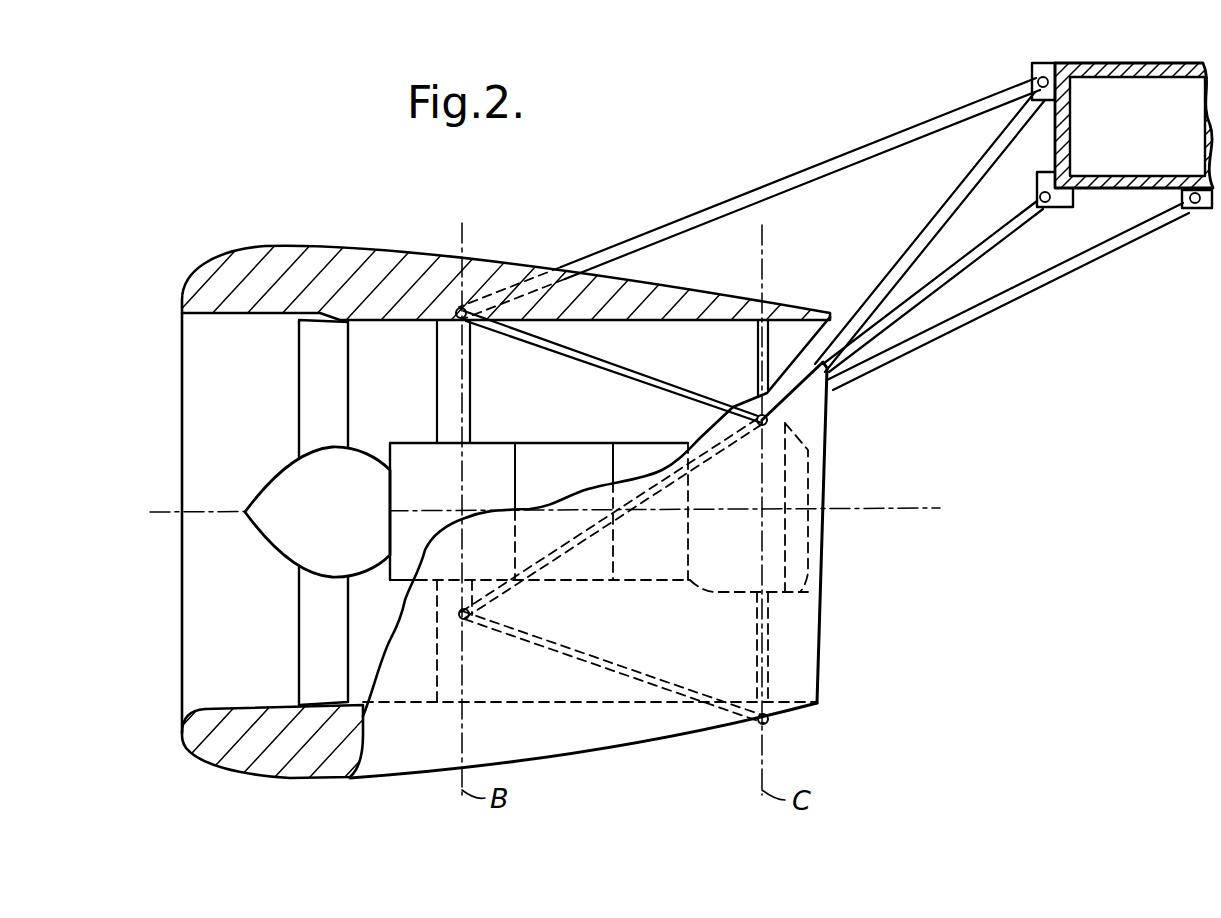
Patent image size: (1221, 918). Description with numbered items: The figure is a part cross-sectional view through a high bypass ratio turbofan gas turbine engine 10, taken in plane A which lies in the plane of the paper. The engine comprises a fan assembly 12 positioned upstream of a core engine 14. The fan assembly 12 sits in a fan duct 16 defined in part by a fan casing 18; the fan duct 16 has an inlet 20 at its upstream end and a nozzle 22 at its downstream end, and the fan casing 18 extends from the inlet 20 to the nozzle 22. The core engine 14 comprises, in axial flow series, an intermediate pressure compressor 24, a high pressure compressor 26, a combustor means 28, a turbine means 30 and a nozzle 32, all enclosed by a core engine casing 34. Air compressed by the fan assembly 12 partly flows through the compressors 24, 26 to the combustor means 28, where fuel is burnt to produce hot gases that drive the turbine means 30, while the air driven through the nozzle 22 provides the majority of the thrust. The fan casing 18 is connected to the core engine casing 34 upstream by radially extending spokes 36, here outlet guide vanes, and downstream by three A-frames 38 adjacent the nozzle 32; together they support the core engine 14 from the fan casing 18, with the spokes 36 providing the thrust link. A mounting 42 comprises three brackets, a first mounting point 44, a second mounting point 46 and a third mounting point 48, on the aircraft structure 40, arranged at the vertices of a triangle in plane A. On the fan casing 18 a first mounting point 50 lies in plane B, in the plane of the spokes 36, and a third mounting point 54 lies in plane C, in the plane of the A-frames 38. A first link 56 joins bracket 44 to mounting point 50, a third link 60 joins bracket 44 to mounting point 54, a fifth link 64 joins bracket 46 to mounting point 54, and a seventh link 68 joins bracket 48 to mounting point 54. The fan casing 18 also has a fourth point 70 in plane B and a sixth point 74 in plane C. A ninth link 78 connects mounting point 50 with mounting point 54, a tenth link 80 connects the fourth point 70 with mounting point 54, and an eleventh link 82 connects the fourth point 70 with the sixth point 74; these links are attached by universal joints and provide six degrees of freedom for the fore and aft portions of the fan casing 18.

The turbofan gas turbine engine 10 is at (322, 224).
The fan assembly 12 is at (283, 462).
The core engine 14 is at (397, 441).
The fan duct 16 is at (571, 388).
The fan casing 18 is at (348, 268).
The inlet 20 is at (182, 421).
The nozzle 22 is at (823, 650).
The intermediate pressure compressor 24 is at (498, 458).
The high pressure compressor 26 is at (560, 460).
The combustor means 28 is at (627, 452).
The turbine means 30 is at (722, 412).
The nozzle 32 is at (805, 538).
The core engine casing 34 is at (705, 588).
The spokes 36 is at (462, 345).
The A-frames 38 is at (757, 347).
The aircraft structure 40 is at (1134, 62).
The mounting 42 is at (638, 200).
The first mounting point 44 is at (1035, 80).
The second mounting point 46 is at (1195, 212).
The third mounting point 48 is at (1067, 212).
The first mounting point 50 is at (457, 308).
The third mounting point 54 is at (825, 422).
The first link 56 is at (772, 185).
The third link 60 is at (915, 231).
The fifth link 64 is at (952, 322).
The seventh link 68 is at (977, 252).
The fourth point 70 is at (478, 613).
The sixth point 74 is at (768, 722).
The ninth link 78 is at (633, 373).
The tenth link 80 is at (600, 538).
The eleventh link 82 is at (620, 672).